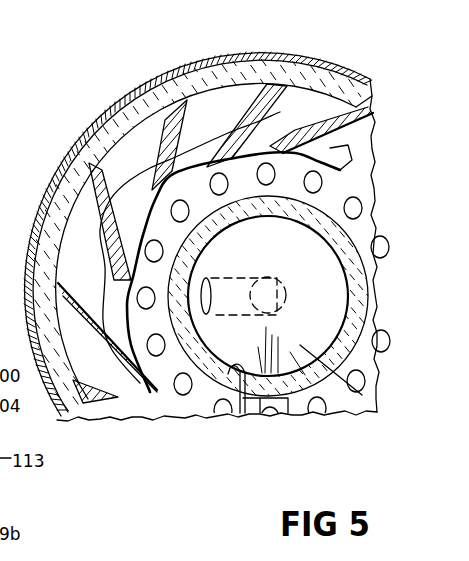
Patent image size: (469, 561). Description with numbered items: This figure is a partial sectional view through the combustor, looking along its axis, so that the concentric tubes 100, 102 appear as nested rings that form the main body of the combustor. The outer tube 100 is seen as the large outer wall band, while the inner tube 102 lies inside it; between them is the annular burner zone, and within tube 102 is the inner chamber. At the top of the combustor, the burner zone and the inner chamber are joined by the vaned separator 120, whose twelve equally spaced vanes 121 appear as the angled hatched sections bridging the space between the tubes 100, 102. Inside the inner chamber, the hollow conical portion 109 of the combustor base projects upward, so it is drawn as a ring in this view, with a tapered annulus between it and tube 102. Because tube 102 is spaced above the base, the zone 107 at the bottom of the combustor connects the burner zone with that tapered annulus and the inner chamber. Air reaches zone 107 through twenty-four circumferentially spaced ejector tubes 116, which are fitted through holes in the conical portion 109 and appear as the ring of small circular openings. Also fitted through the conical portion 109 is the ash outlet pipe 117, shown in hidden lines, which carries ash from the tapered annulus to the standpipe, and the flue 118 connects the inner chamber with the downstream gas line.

The concentric tube 100 is at (254, 70).
The concentric tube 102 is at (273, 137).
The zone 107 is at (347, 404).
The hollow conical portion 109 is at (315, 343).
The ejector tubes 116 is at (215, 410).
The ash outlet pipe 117 is at (224, 278).
The flue 118 is at (241, 414).
The vaned separator 120 is at (87, 246).
The vanes 121 is at (165, 146).